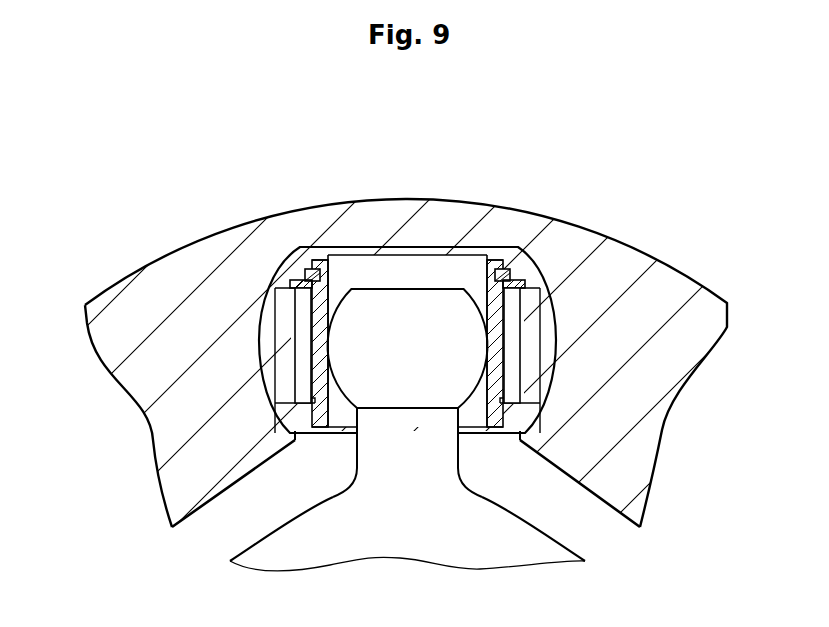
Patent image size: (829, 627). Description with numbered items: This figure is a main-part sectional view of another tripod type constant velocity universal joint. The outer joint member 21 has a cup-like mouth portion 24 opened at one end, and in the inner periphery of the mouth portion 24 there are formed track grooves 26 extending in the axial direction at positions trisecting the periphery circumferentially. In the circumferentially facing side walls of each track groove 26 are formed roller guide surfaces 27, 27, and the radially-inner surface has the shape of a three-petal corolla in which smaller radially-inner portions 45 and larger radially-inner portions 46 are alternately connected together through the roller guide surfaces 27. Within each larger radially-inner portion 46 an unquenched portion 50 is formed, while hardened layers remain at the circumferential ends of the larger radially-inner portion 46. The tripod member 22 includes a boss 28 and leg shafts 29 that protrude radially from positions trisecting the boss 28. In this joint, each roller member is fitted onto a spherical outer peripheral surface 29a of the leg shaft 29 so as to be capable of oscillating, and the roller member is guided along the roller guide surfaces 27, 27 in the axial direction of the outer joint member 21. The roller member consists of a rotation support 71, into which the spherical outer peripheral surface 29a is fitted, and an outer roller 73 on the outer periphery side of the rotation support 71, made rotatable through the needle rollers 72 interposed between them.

The outer joint member 21 is at (178, 222).
The tripod member 22 is at (473, 553).
The mouth portion 24 is at (583, 217).
The track groove 26 is at (439, 266).
The roller guide surface 27 is at (271, 352).
The boss 28 is at (382, 533).
The leg shaft 29 is at (378, 440).
The spherical outer peripheral surface 29a is at (455, 385).
The smaller radially-inner portion 45 is at (227, 483).
The larger radially-inner portion 46 is at (385, 256).
The unquenched portion 50 is at (413, 258).
The rotation support 71 is at (322, 290).
The needle rollers 72 is at (300, 308).
The outer roller 73 is at (277, 382).